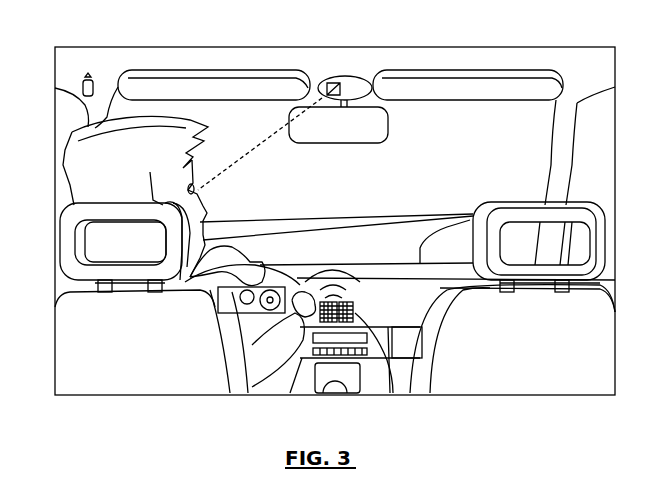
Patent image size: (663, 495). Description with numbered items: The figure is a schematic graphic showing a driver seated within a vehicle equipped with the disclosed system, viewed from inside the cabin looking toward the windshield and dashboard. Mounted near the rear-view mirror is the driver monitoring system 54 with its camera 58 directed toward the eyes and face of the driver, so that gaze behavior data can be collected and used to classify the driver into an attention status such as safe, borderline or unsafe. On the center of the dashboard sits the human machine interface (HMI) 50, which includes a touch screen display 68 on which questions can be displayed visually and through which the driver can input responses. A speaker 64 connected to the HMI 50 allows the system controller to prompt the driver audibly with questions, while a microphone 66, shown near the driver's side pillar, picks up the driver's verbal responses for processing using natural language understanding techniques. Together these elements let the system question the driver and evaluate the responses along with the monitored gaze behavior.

The human machine interface (HMI) 50 is at (323, 373).
The driver monitoring system 54 is at (343, 87).
The camera 58 is at (90, 177).
The speaker 64 is at (383, 357).
The microphone 66 is at (77, 82).
The touch screen display 68 is at (320, 370).